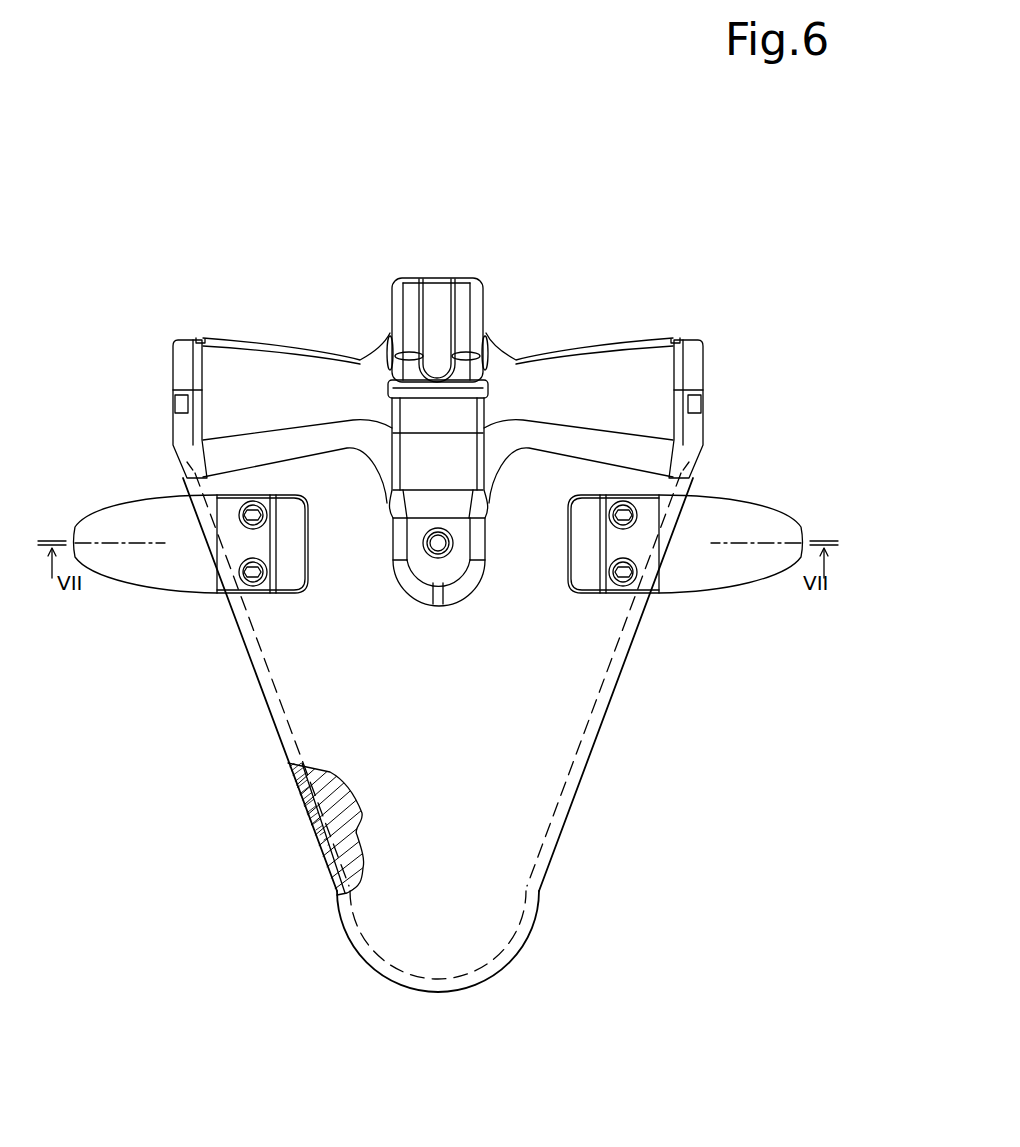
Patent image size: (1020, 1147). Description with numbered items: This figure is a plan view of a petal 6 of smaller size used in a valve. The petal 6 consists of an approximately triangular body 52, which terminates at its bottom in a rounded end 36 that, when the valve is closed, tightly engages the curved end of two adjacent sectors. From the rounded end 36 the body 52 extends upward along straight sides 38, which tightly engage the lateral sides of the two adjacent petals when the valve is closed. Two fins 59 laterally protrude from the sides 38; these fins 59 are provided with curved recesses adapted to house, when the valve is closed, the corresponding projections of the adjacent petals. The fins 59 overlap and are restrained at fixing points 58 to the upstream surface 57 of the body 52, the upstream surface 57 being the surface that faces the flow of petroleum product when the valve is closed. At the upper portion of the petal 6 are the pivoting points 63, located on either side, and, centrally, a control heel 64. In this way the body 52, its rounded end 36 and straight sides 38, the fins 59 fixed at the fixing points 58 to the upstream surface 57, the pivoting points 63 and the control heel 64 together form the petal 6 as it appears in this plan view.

The petal 6 is at (620, 692).
The rounded end 36 is at (433, 992).
The straight sides 38 is at (250, 672).
The body 52 is at (444, 786).
The upstream surface 57 is at (477, 870).
The fixing points 58 is at (257, 515).
The fins 59 is at (130, 567).
The pivoting points 63 is at (173, 403).
The control heel 64 is at (475, 303).